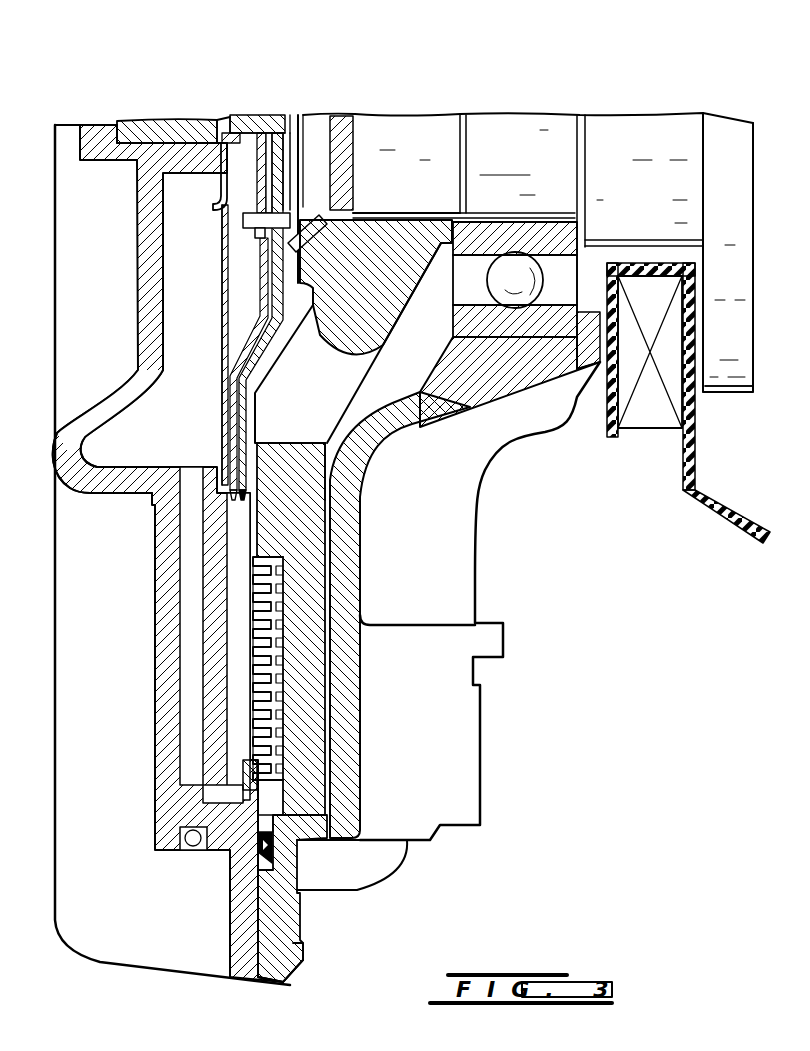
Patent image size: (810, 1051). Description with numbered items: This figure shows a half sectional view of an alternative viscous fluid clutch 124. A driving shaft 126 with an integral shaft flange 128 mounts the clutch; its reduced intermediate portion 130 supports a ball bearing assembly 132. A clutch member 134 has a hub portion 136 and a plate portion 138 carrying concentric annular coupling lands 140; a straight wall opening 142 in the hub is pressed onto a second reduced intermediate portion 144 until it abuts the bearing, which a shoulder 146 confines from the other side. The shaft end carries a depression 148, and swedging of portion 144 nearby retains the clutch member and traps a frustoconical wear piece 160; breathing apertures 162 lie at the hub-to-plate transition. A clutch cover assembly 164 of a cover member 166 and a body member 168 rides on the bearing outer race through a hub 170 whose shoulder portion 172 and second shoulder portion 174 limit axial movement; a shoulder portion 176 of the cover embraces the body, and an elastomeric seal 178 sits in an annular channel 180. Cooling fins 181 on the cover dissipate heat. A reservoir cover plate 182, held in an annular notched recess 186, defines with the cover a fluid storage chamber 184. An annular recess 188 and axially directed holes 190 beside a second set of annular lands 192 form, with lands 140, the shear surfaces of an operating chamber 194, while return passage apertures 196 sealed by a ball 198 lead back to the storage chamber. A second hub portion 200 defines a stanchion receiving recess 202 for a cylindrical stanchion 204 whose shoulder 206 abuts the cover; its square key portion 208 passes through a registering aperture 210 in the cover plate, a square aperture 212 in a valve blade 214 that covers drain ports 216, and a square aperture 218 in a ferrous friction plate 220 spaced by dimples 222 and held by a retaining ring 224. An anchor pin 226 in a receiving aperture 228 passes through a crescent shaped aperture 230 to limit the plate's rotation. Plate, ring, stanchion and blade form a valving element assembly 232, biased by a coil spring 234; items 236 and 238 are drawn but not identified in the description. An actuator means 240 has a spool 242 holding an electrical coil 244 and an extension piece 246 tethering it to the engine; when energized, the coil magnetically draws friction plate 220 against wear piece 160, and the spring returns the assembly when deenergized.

The viscous fluid clutch 124 is at (418, 82).
The driving shaft 126 is at (742, 118).
The shaft flange 128 is at (728, 318).
The reduced intermediate portion 130 is at (522, 181).
The ball bearing assembly 132 is at (522, 222).
The clutch member 134 is at (340, 773).
The hub portion 136 is at (376, 287).
The plate portion 138 is at (360, 707).
The annular coupling lands 140 is at (280, 597).
The straight wall opening 142 is at (405, 220).
The second reduced intermediate portion 144 is at (464, 180).
The shoulder 146 is at (567, 233).
The depression 148 is at (352, 135).
The wear piece 160 is at (310, 235).
The breathing apertures 162 is at (293, 374).
The clutch cover assembly 164 is at (300, 983).
The cover member 166 is at (158, 962).
The body member 168 is at (280, 917).
The hub 170 is at (513, 353).
The shoulder portion 172 is at (588, 312).
The second shoulder portion 174 is at (463, 367).
The shoulder portion 176 is at (302, 950).
The elastomeric seal 178 is at (258, 848).
The annular channel 180 is at (275, 870).
The cooling fins 181 is at (83, 900).
The reservoir cover plate 182 is at (258, 290).
The fluid storage chamber 184 is at (118, 448).
The annular notched recess 186 is at (177, 522).
The annular recess 188 is at (243, 768).
The axially directed holes 190 is at (210, 803).
The annular lands 192 is at (255, 607).
The operating chamber 194 is at (255, 637).
The return passage apertures 196 is at (190, 678).
The ball 198 is at (188, 852).
The second hub portion 200 is at (85, 140).
The stanchion receiving recess 202 is at (118, 128).
The cylindrical stanchion 204 is at (148, 120).
The shoulder 206 is at (215, 118).
The key portion 208 is at (255, 115).
The registering aperture 210 is at (272, 115).
The square aperture 212 is at (215, 118).
The valve blade 214 is at (222, 316).
The drain ports 216 is at (227, 410).
The square aperture 218 is at (285, 115).
The friction plate 220 is at (258, 366).
The dimples 222 is at (247, 487).
The retaining ring 224 is at (322, 115).
The anchor pin 226 is at (243, 220).
The receiving aperture 228 is at (258, 248).
The crescent shaped aperture 230 is at (295, 198).
The valving element assembly 232 is at (205, 55).
The coil spring 234 is at (265, 115).
The hook bracket 236 is at (216, 207).
The thin rod 238 is at (262, 272).
The actuator means 240 is at (608, 470).
The spool 242 is at (610, 420).
The electrical inductor 244 is at (652, 420).
The extension piece 246 is at (718, 508).